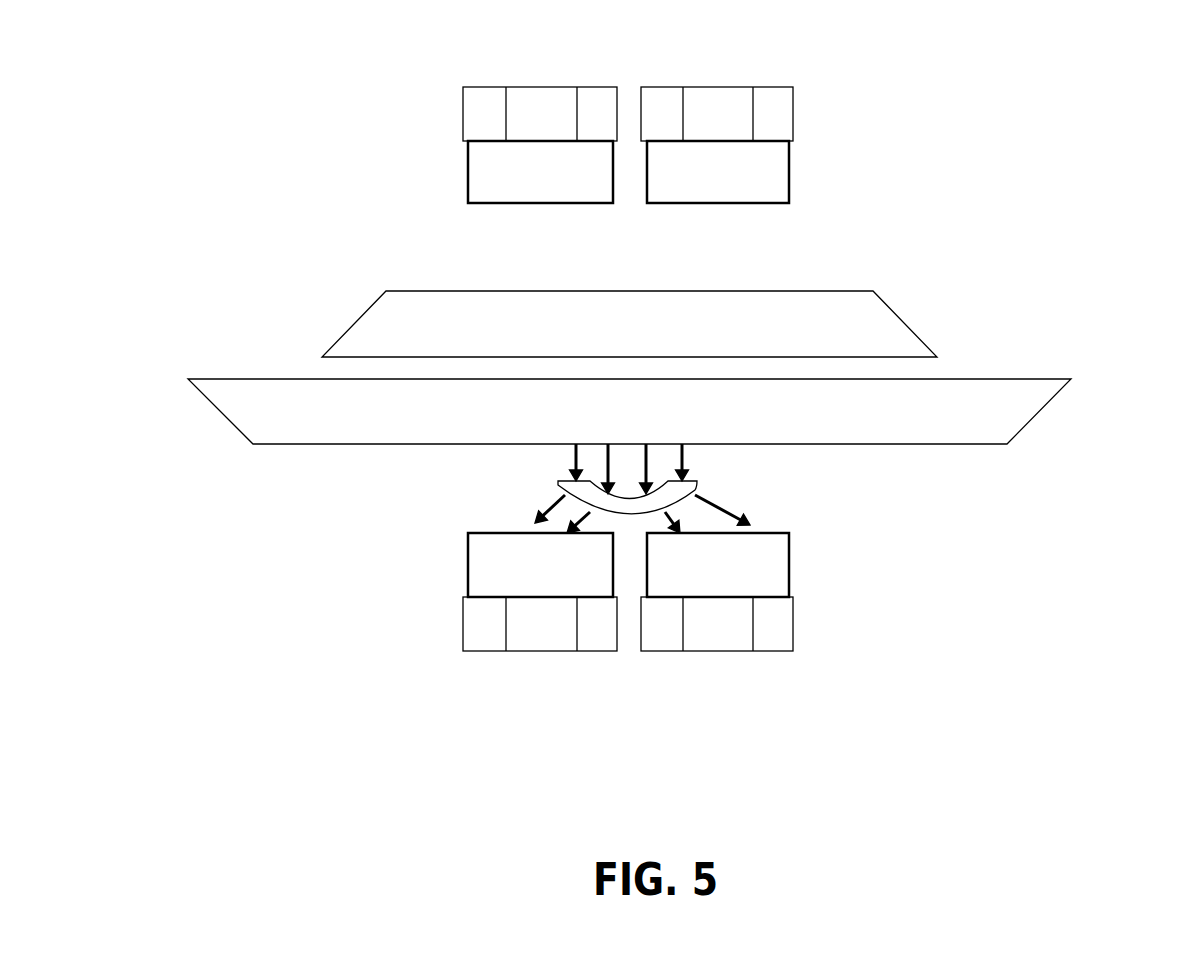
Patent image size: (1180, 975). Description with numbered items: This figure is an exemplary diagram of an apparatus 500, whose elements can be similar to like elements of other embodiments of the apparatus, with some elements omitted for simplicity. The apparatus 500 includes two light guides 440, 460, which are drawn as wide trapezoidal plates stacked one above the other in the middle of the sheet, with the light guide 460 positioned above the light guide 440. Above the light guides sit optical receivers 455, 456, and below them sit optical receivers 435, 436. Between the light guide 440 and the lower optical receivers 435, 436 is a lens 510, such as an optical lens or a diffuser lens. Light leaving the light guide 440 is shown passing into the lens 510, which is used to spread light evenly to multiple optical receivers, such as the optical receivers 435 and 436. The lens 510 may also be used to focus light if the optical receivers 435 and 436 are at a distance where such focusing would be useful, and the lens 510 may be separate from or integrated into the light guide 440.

The apparatus 500 is at (1138, 56).
The optical receiver 455 is at (468, 152).
The optical receiver 456 is at (793, 163).
The light guide 460 is at (905, 323).
The light guide 440 is at (230, 378).
The lens 510 is at (700, 485).
The optical receiver 436 is at (468, 578).
The optical receiver 435 is at (793, 565).